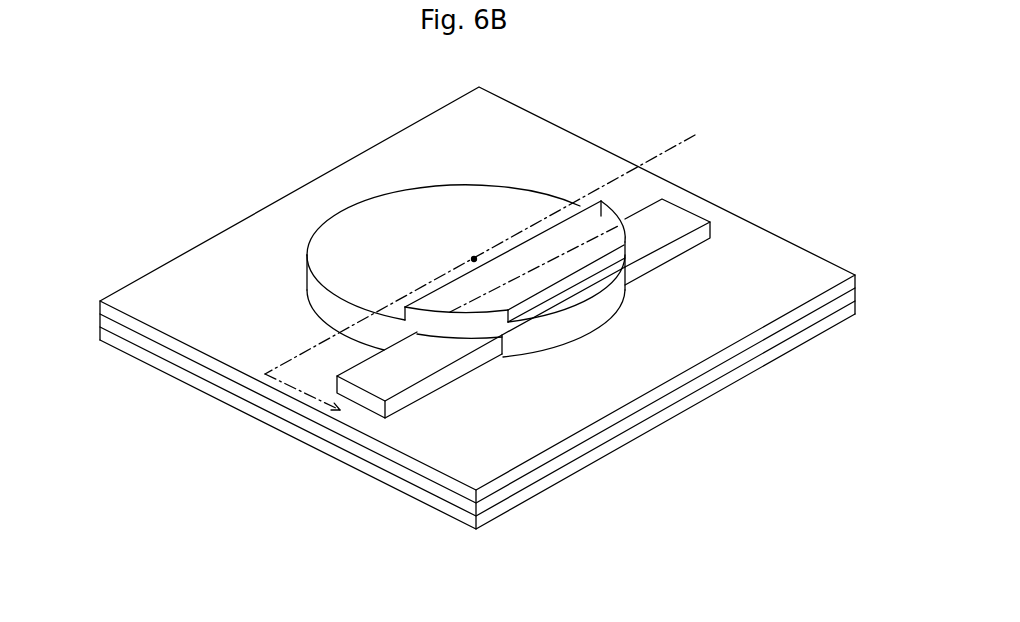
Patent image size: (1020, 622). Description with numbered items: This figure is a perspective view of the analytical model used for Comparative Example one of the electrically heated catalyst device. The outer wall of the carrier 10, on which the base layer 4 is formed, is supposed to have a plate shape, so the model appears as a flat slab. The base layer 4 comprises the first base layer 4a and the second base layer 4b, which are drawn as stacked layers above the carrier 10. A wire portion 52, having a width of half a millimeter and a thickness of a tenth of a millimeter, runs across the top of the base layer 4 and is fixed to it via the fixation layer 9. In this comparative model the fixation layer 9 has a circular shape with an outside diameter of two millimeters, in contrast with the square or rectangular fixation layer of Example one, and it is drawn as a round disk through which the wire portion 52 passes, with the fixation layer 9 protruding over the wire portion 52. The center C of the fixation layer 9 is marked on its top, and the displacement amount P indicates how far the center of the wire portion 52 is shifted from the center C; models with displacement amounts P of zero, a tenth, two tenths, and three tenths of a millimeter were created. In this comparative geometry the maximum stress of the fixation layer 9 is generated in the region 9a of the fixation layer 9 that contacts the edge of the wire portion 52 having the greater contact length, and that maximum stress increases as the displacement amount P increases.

The base layer 4 is at (907, 245).
The first base layer 4a is at (858, 295).
The second base layer 4b is at (858, 280).
The carrier 10 is at (858, 311).
The fixation layer 9 is at (600, 212).
The region of the fixation layer 9a is at (432, 320).
The wire portion 52 is at (398, 404).
The center of the fixation layer C is at (470, 240).
The displacement amount P is at (480, 272).